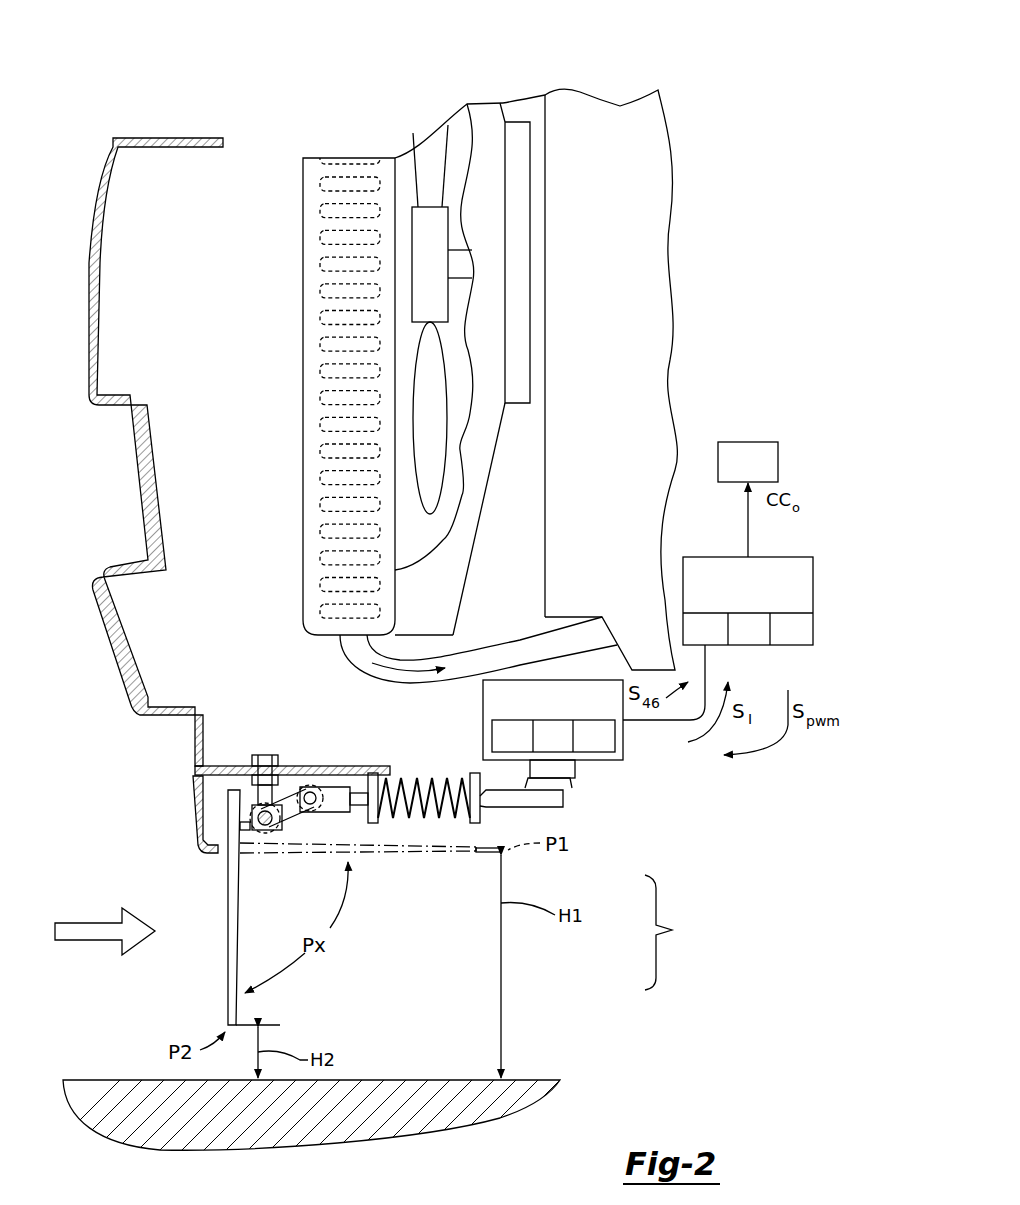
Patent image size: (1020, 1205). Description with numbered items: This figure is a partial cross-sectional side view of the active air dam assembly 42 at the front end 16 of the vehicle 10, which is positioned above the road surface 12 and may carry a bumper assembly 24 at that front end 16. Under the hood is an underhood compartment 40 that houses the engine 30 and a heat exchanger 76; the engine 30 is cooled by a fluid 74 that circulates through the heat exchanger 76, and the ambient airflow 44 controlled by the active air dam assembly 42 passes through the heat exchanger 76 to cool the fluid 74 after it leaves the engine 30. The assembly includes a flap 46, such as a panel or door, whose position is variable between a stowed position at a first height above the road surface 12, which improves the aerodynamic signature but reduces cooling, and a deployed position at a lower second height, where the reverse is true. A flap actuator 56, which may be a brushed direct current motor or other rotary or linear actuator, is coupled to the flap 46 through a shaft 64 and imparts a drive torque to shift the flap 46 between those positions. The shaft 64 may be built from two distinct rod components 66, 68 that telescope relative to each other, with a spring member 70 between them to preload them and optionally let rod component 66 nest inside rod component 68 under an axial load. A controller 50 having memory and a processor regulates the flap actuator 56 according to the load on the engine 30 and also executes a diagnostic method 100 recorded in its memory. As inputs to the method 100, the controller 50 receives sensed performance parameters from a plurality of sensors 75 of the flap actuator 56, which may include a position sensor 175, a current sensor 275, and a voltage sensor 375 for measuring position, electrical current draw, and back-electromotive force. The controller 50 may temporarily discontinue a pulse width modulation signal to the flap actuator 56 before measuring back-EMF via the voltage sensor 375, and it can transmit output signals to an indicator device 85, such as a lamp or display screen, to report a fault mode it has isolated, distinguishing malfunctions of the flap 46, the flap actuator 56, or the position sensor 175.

The vehicle 10 is at (716, 110).
The road surface 12 is at (380, 1076).
The front end 16 is at (110, 698).
The bumper assembly 24 is at (100, 615).
The engine 30 is at (613, 533).
The underhood compartment 40 is at (235, 491).
The active air dam assembly 42 is at (672, 932).
The ambient airflow 44 is at (88, 940).
The flap 46 is at (228, 950).
The controller 50 is at (748, 601).
The flap actuator 56 is at (575, 721).
The shaft 64 is at (424, 759).
The rod component 66 is at (372, 775).
The rod component 68 is at (476, 775).
The spring member 70 is at (462, 818).
The fluid 74 is at (423, 660).
The sensors 75 is at (580, 741).
The heat exchanger 76 is at (303, 562).
The indicator device 85 is at (757, 476).
The method 100 is at (711, 641).
The position sensor 175 is at (519, 749).
The current sensor 275 is at (560, 749).
The voltage sensor 375 is at (601, 749).